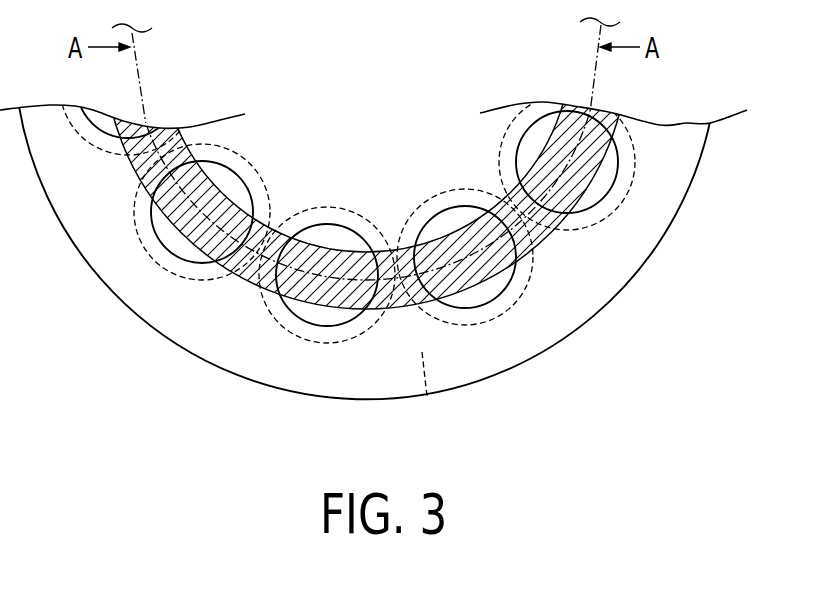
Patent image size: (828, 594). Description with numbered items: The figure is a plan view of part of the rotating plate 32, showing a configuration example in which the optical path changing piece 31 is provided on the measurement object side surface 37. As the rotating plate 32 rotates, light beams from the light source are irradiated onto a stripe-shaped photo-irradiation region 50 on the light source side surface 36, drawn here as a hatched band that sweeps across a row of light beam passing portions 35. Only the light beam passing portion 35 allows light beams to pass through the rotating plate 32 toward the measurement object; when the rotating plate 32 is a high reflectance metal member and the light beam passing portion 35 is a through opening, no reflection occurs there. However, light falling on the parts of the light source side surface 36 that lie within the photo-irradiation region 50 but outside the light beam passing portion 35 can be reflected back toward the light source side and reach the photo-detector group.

The optical path changing piece 31 is at (282, 333).
The rotating plate 32 is at (686, 196).
The light beam passing portion 35 is at (337, 318).
The light source side surface 36 is at (640, 223).
The measurement object side surface 37 is at (430, 395).
The photo-irradiation region 50 is at (548, 258).